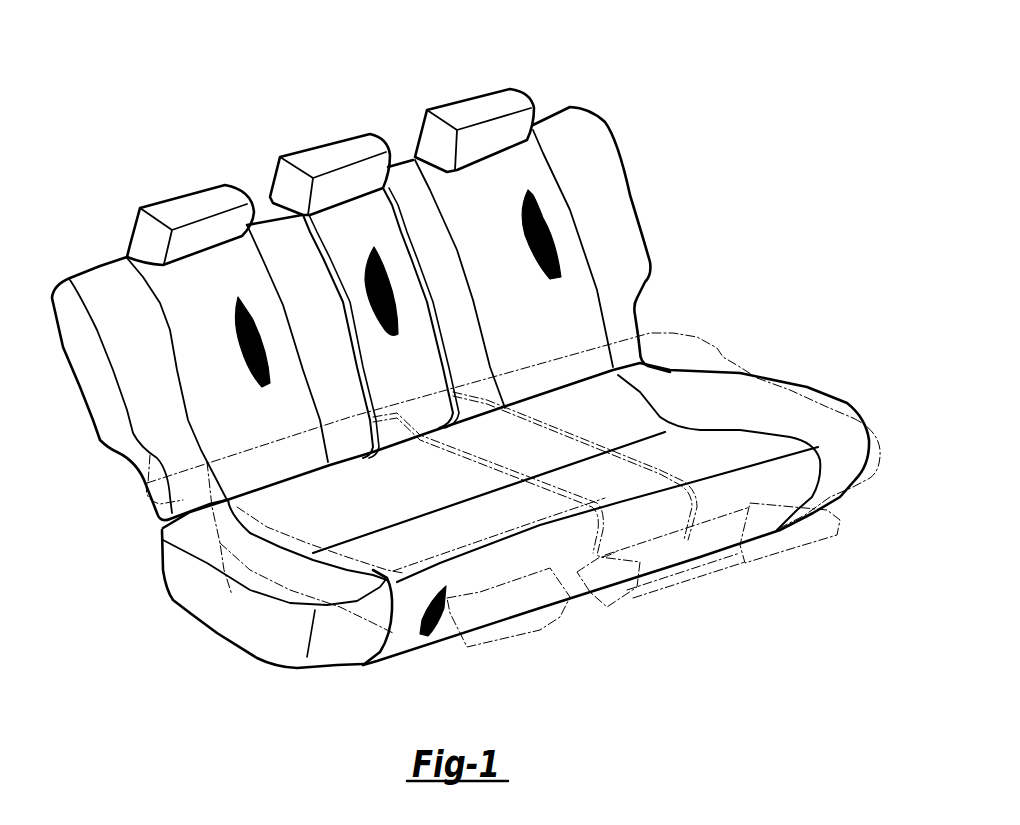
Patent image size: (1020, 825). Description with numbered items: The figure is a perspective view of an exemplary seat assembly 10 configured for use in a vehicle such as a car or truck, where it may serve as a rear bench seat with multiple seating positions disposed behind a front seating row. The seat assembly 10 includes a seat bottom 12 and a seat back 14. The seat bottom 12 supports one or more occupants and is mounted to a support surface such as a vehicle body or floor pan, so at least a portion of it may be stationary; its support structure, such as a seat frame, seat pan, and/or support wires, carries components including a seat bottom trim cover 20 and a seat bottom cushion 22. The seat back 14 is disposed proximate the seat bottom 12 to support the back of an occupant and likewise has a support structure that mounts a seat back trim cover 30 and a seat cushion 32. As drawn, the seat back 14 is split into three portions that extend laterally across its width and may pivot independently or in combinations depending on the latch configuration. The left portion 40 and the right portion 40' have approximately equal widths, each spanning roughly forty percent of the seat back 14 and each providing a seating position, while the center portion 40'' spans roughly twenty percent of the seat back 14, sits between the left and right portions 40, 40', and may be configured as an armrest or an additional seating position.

The seat assembly 10 is at (466, 381).
The seat bottom 12 is at (228, 608).
The seat back 14 is at (92, 283).
The seat bottom trim cover 20 is at (393, 637).
The seat bottom cushion 22 is at (413, 633).
The seat back trim cover 30 is at (588, 155).
The seat cushion 32 is at (230, 338).
The portion 40 is at (178, 215).
The portion 40' is at (489, 95).
The portion 40'' is at (335, 153).